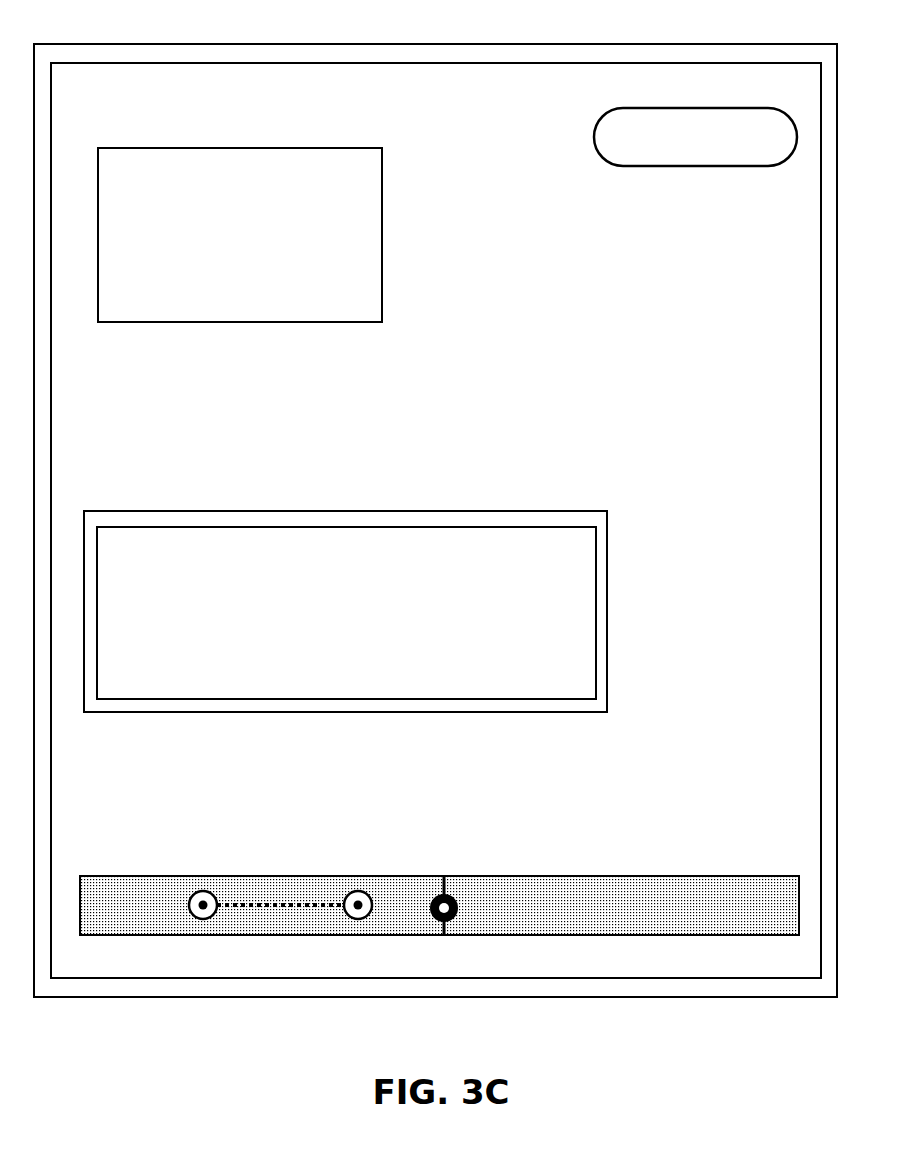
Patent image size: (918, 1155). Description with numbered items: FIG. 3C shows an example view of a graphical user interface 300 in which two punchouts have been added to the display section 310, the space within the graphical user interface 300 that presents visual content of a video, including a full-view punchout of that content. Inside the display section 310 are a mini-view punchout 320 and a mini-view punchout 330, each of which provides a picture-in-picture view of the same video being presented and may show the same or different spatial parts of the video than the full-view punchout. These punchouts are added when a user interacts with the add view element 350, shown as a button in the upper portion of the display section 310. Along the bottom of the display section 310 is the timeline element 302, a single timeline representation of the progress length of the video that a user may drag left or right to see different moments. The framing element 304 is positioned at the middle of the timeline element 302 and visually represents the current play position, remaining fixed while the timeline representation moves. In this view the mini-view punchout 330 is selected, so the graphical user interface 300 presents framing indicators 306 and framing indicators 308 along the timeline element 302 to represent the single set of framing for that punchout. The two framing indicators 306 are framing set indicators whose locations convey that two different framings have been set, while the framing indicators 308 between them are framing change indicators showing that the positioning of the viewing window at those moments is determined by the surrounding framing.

The graphical user interface 300 is at (459, 38).
The display section 310 is at (436, 520).
The mini-view punchout 320 is at (240, 235).
The mini-view punchout 330 is at (345, 611).
The add view element 350 is at (707, 166).
The timeline element 302 is at (725, 876).
The framing element 304 is at (445, 876).
The framing indicators 306 is at (355, 893).
The framing indicators 308 is at (287, 905).